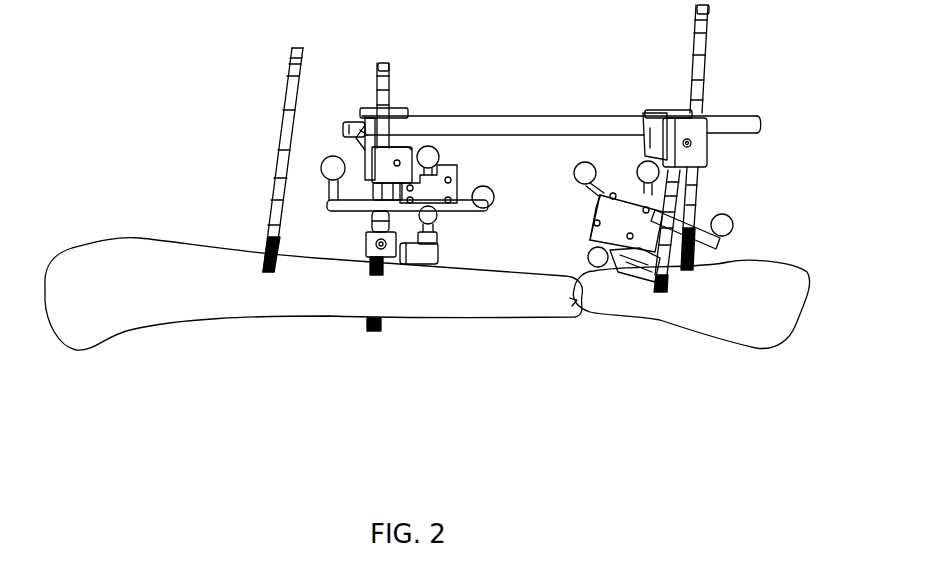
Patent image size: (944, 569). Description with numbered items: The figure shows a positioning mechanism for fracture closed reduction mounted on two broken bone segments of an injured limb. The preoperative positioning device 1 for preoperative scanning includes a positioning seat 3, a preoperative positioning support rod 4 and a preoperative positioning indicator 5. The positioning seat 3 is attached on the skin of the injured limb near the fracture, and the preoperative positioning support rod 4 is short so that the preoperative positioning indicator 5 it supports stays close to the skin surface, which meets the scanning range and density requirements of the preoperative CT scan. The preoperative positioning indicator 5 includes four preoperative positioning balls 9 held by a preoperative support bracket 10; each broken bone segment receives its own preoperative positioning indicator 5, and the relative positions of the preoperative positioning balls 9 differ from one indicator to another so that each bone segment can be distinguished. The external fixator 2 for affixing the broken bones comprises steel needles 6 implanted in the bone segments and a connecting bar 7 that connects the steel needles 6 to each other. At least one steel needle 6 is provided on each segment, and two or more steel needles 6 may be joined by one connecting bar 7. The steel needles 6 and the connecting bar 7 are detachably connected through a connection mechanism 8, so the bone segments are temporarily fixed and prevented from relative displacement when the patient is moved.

The preoperative positioning device 1 is at (452, 166).
The external fixator 2 is at (394, 128).
The positioning seat 3 is at (418, 265).
The preoperative positioning support rod 4 is at (438, 238).
The preoperative positioning indicator 5 is at (440, 189).
The steel needle 6 is at (703, 66).
The connecting bar 7 is at (488, 125).
The connection mechanism 8 is at (686, 140).
The preoperative positioning ball 9 is at (724, 220).
The preoperative support bracket 10 is at (620, 220).